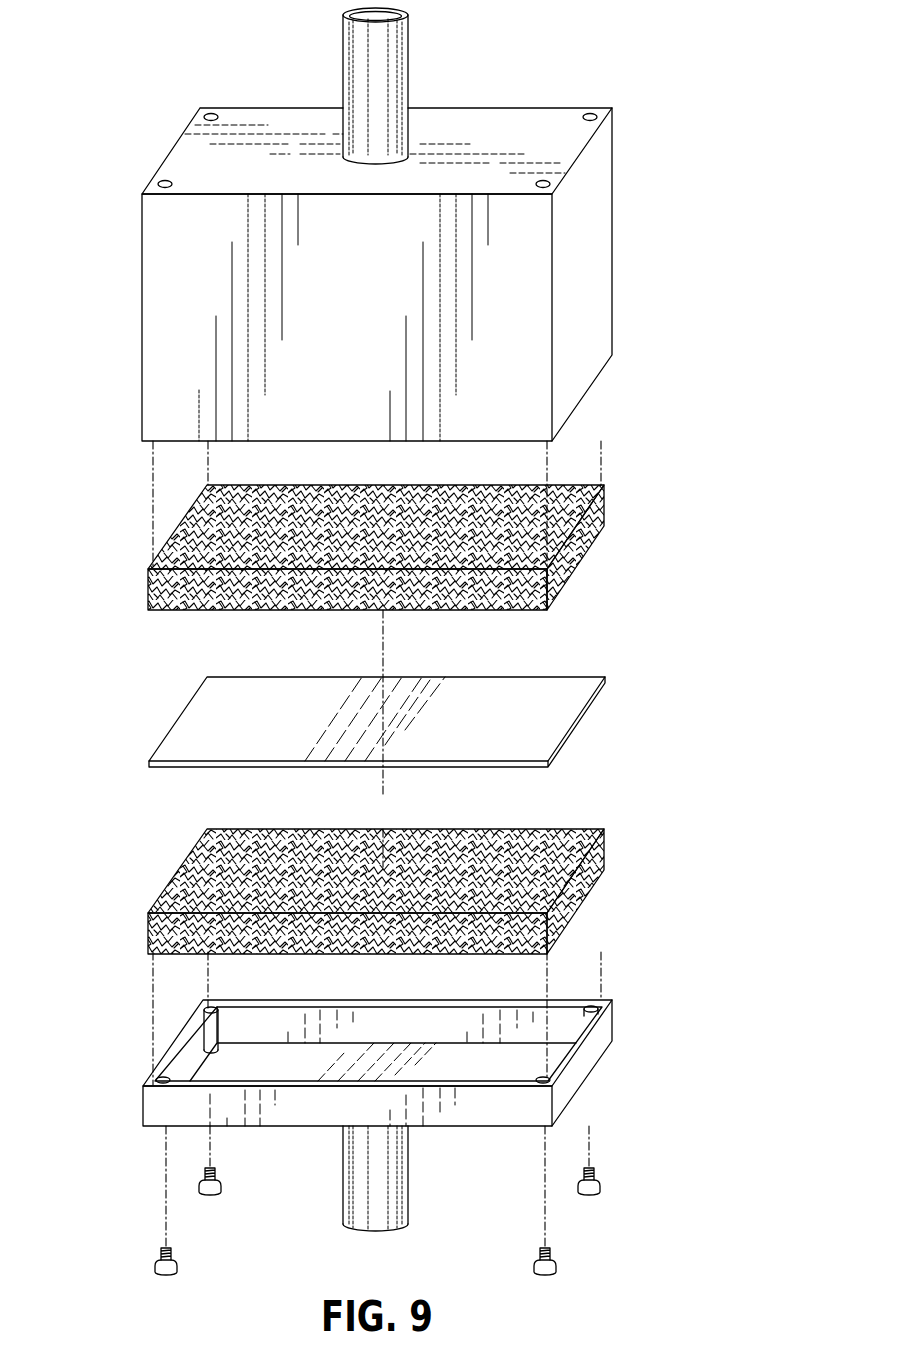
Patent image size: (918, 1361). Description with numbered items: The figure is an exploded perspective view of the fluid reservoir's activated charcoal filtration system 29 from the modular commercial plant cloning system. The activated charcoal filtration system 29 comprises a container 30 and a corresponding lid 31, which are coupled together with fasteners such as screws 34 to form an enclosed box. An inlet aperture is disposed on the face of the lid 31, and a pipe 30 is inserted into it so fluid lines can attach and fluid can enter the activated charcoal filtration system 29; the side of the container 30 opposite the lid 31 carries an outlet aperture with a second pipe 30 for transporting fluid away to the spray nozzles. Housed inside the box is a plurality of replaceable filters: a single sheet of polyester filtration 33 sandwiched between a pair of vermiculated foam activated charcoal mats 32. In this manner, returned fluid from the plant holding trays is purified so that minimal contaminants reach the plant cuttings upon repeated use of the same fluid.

The activated charcoal filtration system 29 is at (535, 86).
The container 30 is at (393, 50).
The lid 31 is at (142, 1106).
The vermiculated foam activated charcoal mat 32 is at (148, 595).
The sheet of polyester filtration 33 is at (580, 718).
The screws 34 is at (150, 1268).